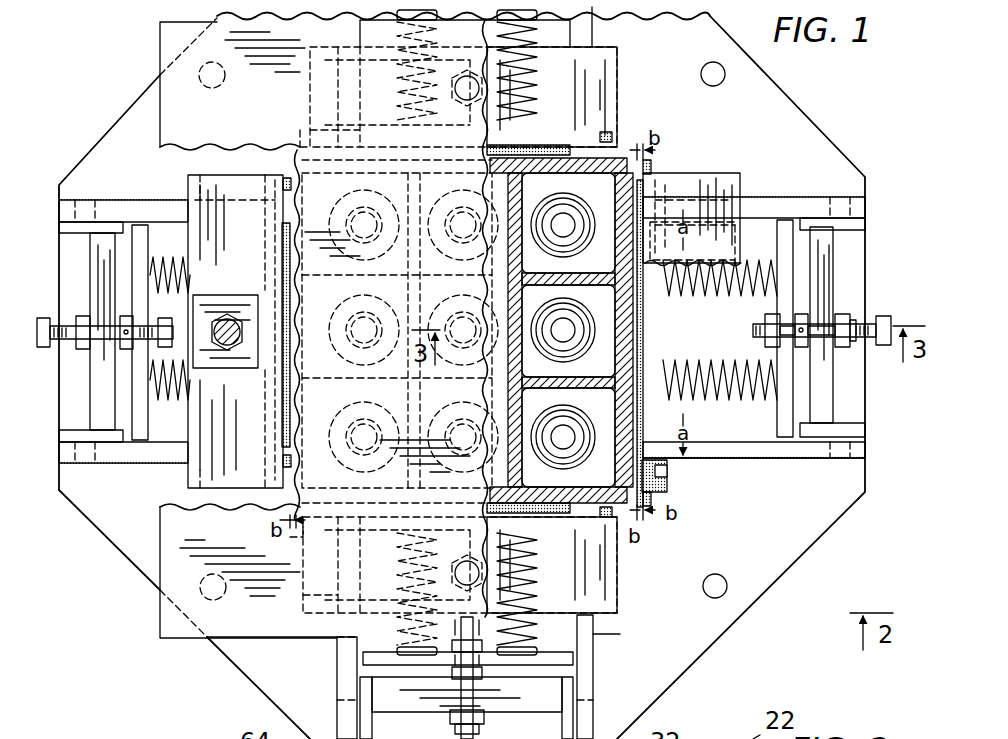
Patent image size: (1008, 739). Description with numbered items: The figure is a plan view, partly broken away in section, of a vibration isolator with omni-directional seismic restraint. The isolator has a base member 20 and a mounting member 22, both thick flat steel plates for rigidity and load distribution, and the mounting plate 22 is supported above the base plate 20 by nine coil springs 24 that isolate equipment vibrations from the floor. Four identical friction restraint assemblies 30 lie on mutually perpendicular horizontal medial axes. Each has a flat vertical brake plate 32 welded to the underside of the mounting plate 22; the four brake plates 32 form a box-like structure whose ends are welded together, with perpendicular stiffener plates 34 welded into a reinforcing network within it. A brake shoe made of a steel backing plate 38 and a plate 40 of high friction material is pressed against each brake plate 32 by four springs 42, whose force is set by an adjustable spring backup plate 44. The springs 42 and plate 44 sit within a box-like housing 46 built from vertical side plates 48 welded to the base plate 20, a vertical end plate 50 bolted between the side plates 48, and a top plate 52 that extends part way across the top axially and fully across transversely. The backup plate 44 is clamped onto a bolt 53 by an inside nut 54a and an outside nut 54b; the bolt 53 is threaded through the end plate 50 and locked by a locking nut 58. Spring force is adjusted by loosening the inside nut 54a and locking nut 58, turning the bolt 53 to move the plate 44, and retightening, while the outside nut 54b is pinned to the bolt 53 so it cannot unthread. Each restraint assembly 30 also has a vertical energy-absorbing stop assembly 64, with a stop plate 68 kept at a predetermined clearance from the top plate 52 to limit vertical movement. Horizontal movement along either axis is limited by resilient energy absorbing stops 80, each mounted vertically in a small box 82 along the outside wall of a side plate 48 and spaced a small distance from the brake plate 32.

The base member 20 is at (813, 543).
The mounting member 22 is at (158, 43).
The coil spring 24 is at (545, 215).
The friction restraint assembly 30 is at (90, 197).
The brake plate 32 is at (590, 157).
The stiffener plate 34 is at (517, 303).
The backing plate 38 is at (665, 254).
The plate of high friction material 40 is at (288, 305).
The spring 42 is at (400, 98).
The spring backup plate 44 is at (140, 442).
The box-like housing 46 is at (752, 462).
The side plate 48 is at (340, 645).
The end plate 50 is at (92, 258).
The top plate 52 is at (210, 185).
The bolt 53 is at (50, 348).
The inside nut 54a is at (778, 332).
The outside nut 54b is at (800, 337).
The locking nut 58 is at (848, 342).
The vertical energy-absorbing stop assembly 64 is at (230, 347).
The stop plate 68 is at (230, 293).
The energy absorbing stop 80 is at (287, 178).
The small box 82 is at (668, 472).